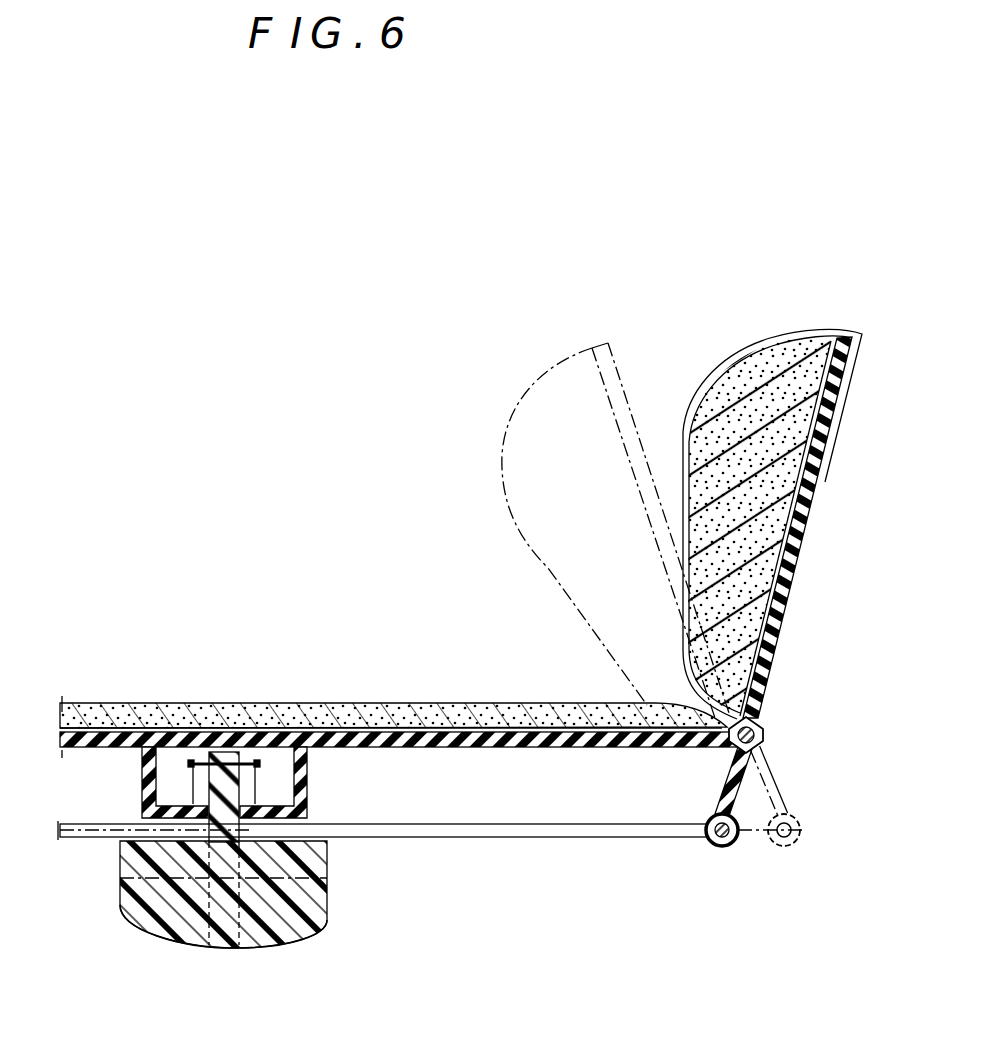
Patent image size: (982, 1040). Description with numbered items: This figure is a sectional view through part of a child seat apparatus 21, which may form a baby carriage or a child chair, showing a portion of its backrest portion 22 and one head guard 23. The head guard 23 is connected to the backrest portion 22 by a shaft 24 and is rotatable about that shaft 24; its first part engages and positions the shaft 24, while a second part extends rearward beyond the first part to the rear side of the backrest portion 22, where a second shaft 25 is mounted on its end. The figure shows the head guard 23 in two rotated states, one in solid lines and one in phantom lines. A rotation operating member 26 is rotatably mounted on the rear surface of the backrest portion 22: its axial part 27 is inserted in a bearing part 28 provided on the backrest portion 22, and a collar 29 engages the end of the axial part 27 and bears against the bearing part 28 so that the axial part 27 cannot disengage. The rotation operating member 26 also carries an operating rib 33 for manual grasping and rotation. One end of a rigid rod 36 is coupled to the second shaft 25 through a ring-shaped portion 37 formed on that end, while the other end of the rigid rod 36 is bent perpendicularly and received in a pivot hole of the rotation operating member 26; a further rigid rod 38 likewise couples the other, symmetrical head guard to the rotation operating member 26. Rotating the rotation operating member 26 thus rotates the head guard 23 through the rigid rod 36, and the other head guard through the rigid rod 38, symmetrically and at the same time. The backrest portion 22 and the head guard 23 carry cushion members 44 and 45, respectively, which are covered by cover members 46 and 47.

The child seat apparatus 21 is at (183, 401).
The backrest portion 22 is at (444, 693).
The head guard 23 is at (626, 360).
The shaft 24 is at (765, 734).
The second shaft 25 is at (724, 852).
The rotation operating member 26 is at (148, 946).
The axial part 27 is at (228, 756).
The bearing part 28 is at (194, 778).
The collar 29 is at (253, 762).
The operating rib 33 is at (280, 938).
The rigid rod 36 is at (479, 838).
The ring-shaped portion 37 is at (743, 838).
The rigid rod 38 is at (68, 833).
The cushion member 44 is at (103, 722).
The cushion member 45 is at (718, 492).
The cover member 46 is at (372, 703).
The cover member 47 is at (766, 333).